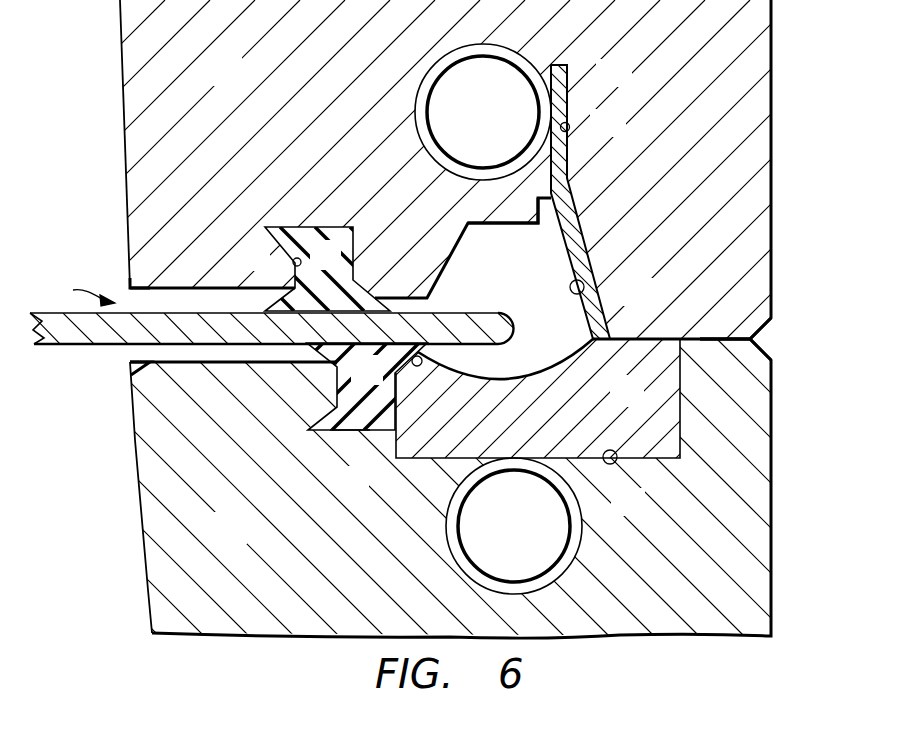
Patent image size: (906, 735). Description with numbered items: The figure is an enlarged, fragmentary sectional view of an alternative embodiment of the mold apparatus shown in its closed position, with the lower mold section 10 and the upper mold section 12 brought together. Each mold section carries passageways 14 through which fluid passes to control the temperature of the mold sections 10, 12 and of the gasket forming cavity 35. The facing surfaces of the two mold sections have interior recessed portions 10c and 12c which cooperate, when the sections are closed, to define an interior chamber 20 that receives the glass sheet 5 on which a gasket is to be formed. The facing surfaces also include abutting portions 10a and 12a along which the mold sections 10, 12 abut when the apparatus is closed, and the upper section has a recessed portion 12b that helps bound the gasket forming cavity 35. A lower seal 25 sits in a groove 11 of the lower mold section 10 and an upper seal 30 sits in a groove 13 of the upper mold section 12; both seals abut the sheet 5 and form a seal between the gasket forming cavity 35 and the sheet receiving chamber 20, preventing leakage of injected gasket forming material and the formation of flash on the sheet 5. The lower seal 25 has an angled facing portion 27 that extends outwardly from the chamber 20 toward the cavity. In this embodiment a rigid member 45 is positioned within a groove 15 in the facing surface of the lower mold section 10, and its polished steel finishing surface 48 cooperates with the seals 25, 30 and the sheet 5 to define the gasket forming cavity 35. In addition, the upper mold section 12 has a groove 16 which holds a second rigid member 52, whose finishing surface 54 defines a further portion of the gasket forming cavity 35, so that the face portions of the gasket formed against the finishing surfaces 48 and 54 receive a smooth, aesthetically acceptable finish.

The glass sheet 5 is at (60, 344).
The lower mold section 10 is at (216, 543).
The abutting portion of lower mold section 10a is at (745, 343).
The interior recessed portion of lower mold section 10c is at (135, 356).
The groove in lower mold section 11 is at (350, 431).
The upper mold section 12 is at (211, 85).
The abutting portion of upper mold section 12a is at (742, 334).
The recessed portion of upper mold section 12b is at (517, 224).
The interior recessed portion of upper mold section 12c is at (136, 292).
The groove in upper mold section 13 is at (293, 262).
The passageways 14 is at (472, 127).
The groove for rigid member 15 is at (611, 464).
The groove for upper rigid member 16 is at (570, 127).
The interior chamber 20 is at (78, 289).
The lower seal 25 is at (353, 384).
The angled facing portion 27 is at (422, 361).
The upper seal 30 is at (311, 269).
The gasket forming cavity 35 is at (463, 293).
The rigid member 45 is at (613, 405).
The finishing surface 48 is at (560, 368).
The rigid member 52 is at (567, 82).
The finishing surface 54 is at (586, 289).